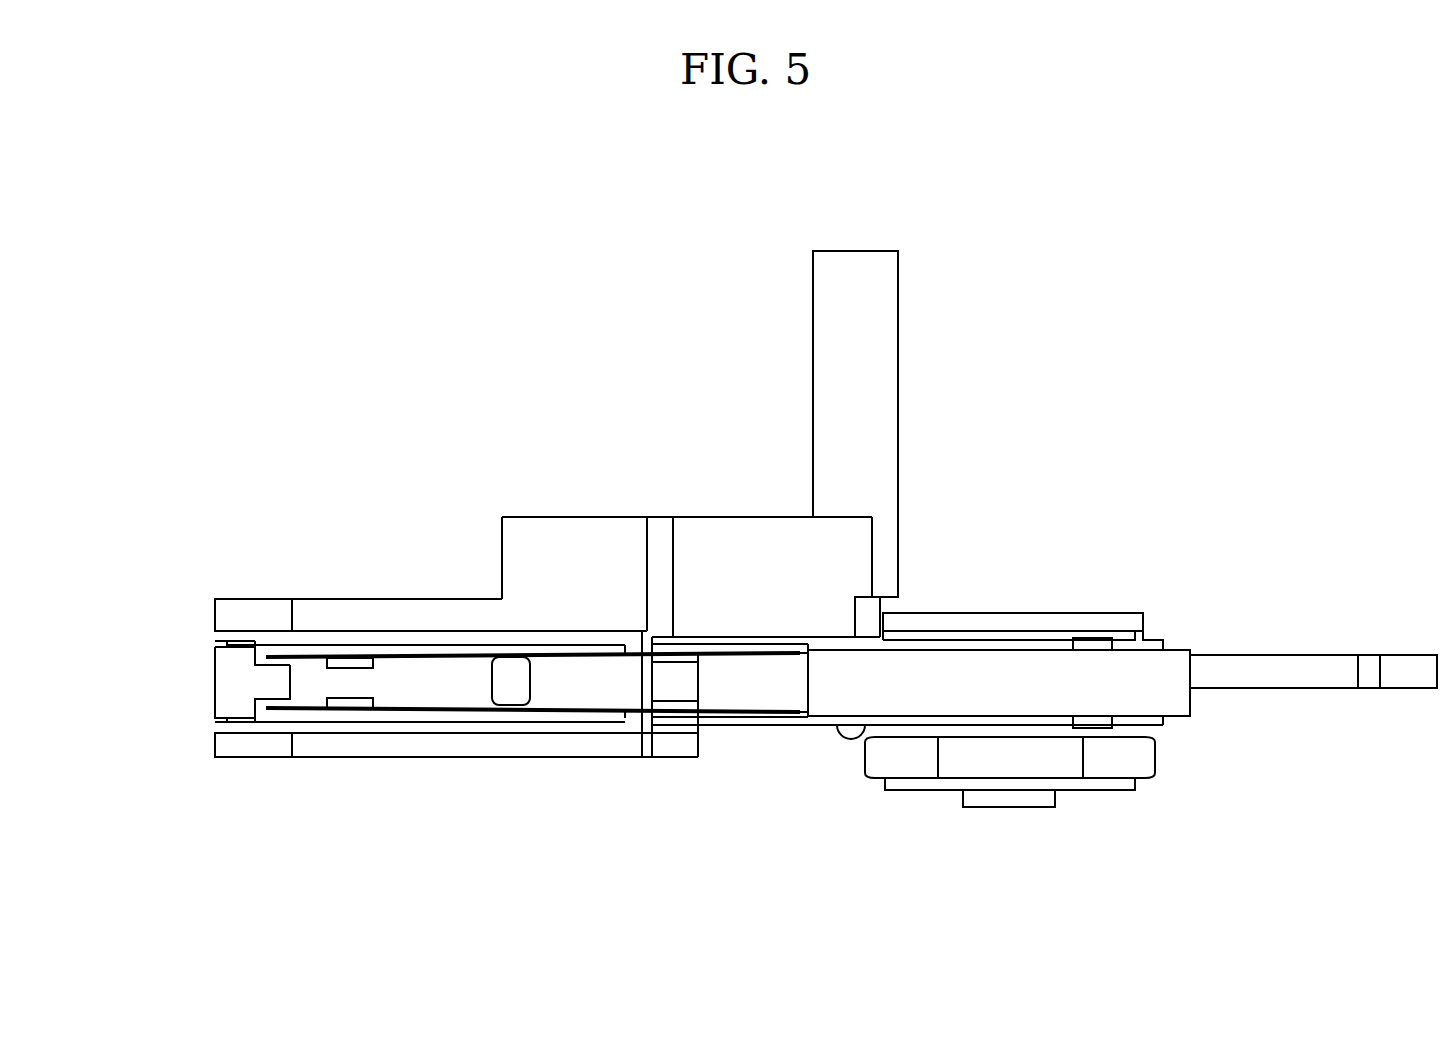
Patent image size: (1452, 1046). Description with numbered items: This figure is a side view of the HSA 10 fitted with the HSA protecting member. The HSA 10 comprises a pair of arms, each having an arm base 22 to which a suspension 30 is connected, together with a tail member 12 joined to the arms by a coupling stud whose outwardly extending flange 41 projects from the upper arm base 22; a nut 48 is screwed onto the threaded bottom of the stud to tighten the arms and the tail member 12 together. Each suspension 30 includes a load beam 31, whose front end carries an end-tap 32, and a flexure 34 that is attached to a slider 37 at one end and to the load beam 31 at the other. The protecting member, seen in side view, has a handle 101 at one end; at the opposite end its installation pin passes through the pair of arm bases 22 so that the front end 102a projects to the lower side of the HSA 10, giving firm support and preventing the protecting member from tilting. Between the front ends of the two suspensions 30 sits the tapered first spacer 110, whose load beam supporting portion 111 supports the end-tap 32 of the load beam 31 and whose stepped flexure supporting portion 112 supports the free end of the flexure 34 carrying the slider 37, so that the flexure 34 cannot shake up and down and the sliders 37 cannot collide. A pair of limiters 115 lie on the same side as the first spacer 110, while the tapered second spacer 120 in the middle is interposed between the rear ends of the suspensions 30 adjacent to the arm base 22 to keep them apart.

The HSA 10 is at (1111, 686).
The tail member 12 is at (1288, 677).
The arm base 22 is at (979, 720).
The suspension 30 is at (533, 649).
The load beam 31 is at (447, 712).
The end-tap 32 is at (216, 641).
The flexure 34 is at (292, 706).
The slider 37 is at (357, 705).
The flange 41 is at (1023, 622).
The nut 48 is at (1010, 765).
The handle 101 is at (890, 358).
The front end of the installation pin 102a is at (850, 736).
The first spacer 110 is at (178, 681).
The load beam supporting portion 111 is at (215, 664).
The flexure supporting portion 112 is at (215, 695).
The limiter 115 is at (258, 614).
The second spacer 120 is at (505, 700).